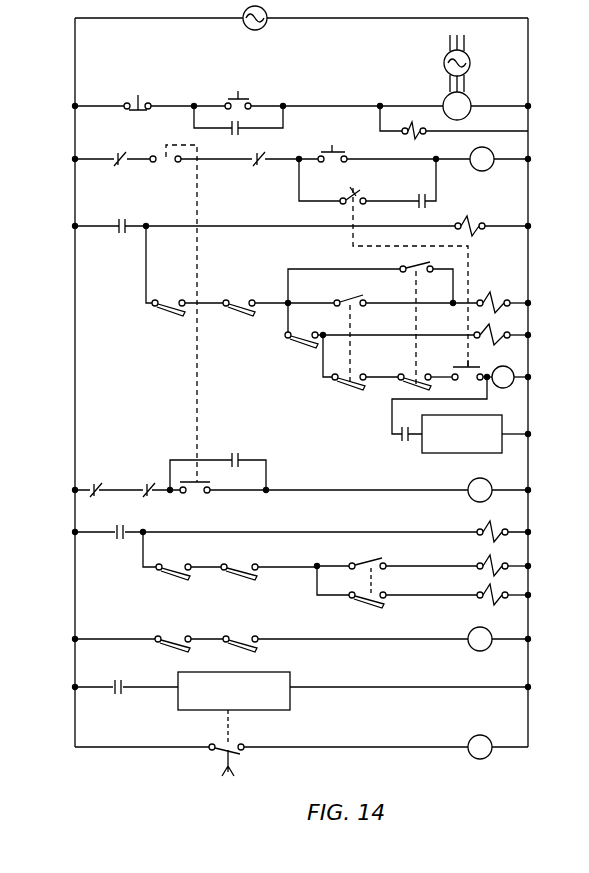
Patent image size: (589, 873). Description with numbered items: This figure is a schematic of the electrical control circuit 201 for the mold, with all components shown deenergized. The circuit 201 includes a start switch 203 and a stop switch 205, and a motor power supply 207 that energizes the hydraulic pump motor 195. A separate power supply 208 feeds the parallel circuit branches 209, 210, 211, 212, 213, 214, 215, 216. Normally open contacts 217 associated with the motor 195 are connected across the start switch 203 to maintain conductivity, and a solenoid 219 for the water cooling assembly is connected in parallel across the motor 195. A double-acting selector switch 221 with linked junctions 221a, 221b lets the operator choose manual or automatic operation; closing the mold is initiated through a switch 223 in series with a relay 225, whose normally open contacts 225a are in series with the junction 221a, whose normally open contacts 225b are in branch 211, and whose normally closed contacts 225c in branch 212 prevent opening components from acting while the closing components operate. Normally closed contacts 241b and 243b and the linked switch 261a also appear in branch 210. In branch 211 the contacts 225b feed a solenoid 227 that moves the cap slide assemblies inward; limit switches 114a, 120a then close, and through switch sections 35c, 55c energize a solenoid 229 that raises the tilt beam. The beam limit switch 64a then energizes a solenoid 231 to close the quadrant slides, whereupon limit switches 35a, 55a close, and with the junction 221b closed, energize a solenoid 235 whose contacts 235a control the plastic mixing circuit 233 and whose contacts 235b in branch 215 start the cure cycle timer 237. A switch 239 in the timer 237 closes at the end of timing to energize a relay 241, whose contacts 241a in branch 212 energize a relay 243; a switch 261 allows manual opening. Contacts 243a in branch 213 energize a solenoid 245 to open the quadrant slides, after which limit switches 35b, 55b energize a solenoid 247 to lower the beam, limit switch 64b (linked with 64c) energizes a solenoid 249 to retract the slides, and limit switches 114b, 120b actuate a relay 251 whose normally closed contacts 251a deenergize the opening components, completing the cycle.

The hydraulic pump motor 195 is at (471, 99).
The circuit 201 is at (528, 53).
The start switch 203 is at (250, 98).
The stop switch 205 is at (140, 100).
The motor power supply 207 is at (446, 60).
The power supply 208 is at (263, 27).
The circuit branch 209 is at (96, 108).
The circuit branch 210 is at (88, 161).
The circuit branch 211 is at (92, 228).
The circuit branch 212 is at (74, 490).
The circuit branch 213 is at (90, 534).
The circuit branch 214 is at (112, 634).
The circuit branch 215 is at (92, 681).
The circuit branch 216 is at (114, 743).
The normally open contacts 217 is at (244, 118).
The solenoid 219 is at (420, 136).
The double-acting selector switch 221 is at (291, 189).
The switch junction 221a is at (340, 207).
The switch junction 221b is at (464, 365).
The switch 223 is at (333, 147).
The relay 225 is at (490, 151).
The normally open contacts 225a is at (434, 211).
The normally open contacts 225b is at (113, 218).
The normally closed contacts 225c is at (90, 484).
The solenoid 227 is at (475, 220).
The solenoid 229 is at (490, 292).
The solenoid 231 is at (486, 327).
The plastic mixing circuit 233 is at (456, 455).
The solenoid 235 is at (509, 363).
The relay contacts 235a is at (414, 439).
The relay contacts 235b is at (124, 689).
The cure cycle timer 237 is at (292, 677).
The switch 239 is at (243, 750).
The relay 241 is at (482, 735).
The contacts 241a is at (239, 455).
The normally closed contacts 241b is at (257, 158).
The relay 243 is at (490, 479).
The contacts 243a is at (132, 534).
The contacts 243b is at (120, 157).
The solenoid 245 is at (482, 526).
The solenoid 247 is at (484, 560).
The solenoid 249 is at (482, 590).
The relay 251 is at (474, 625).
The normally closed contacts 251a is at (143, 484).
The switch 261 is at (195, 494).
The switch 261a is at (160, 163).
The limit switch 114a is at (165, 320).
The limit switch 114b is at (168, 636).
The limit switch 120a is at (251, 319).
The limit switch 120b is at (242, 636).
The limit switch 35a is at (352, 391).
The limit switch 35b is at (168, 579).
The switch section 35c is at (346, 296).
The limit switch 55a is at (407, 366).
The limit switch 55b is at (244, 579).
The switch section 55c is at (403, 264).
The beam limit switch 64a is at (307, 350).
The limit switch 64b is at (376, 608).
The limit switch 64c is at (359, 558).